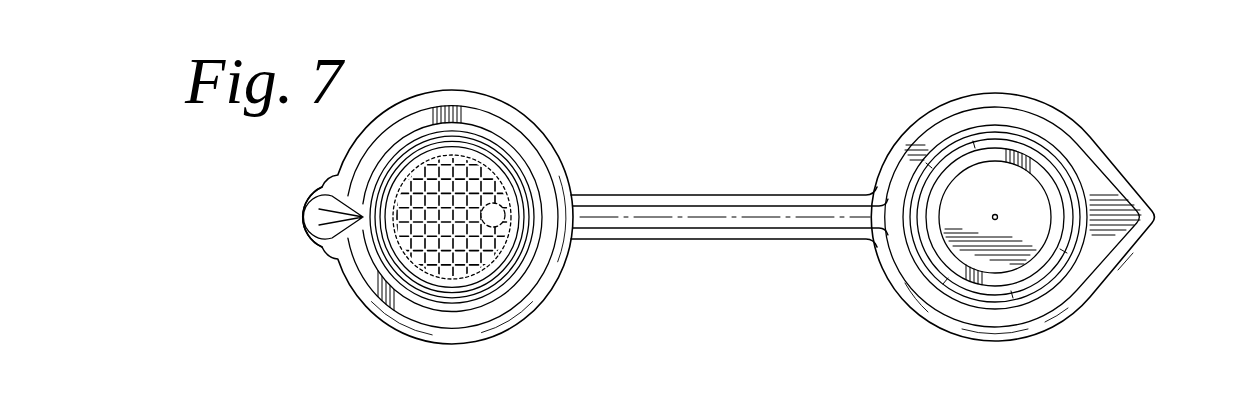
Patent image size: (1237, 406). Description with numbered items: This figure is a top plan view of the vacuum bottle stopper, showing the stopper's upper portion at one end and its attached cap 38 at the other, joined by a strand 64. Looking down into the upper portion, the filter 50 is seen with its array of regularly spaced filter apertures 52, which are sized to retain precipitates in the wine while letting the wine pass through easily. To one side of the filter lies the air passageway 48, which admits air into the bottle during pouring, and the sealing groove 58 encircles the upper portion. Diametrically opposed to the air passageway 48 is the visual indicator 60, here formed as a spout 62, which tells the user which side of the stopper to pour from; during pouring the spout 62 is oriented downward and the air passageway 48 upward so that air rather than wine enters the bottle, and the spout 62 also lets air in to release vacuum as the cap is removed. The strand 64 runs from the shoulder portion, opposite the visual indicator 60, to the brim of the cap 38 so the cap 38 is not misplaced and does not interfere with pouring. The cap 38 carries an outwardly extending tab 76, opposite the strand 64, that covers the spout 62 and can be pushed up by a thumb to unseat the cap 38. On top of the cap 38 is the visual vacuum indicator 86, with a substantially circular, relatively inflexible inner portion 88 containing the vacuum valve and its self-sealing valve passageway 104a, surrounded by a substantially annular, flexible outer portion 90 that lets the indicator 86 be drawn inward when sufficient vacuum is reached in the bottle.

The cap 38 is at (1074, 92).
The air passageway 48 is at (503, 208).
The filter 50 is at (458, 168).
The filter apertures 52 is at (422, 242).
The sealing groove 58 is at (418, 133).
The visual indicator 60 is at (307, 216).
The spout 62 is at (313, 227).
The strand 64 is at (752, 240).
The tab 76 is at (1159, 221).
The visual vacuum indicator 86 is at (1053, 180).
The inner portion 88 is at (1030, 243).
The outer portion 90 is at (1045, 247).
The valve passageway 104a is at (993, 214).